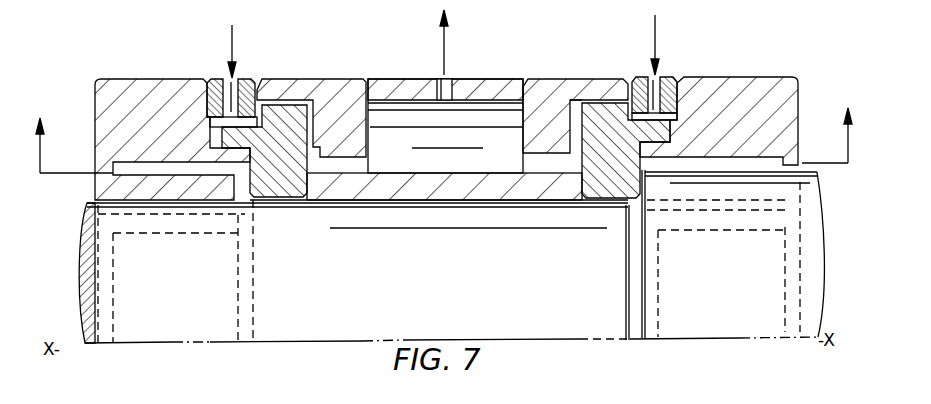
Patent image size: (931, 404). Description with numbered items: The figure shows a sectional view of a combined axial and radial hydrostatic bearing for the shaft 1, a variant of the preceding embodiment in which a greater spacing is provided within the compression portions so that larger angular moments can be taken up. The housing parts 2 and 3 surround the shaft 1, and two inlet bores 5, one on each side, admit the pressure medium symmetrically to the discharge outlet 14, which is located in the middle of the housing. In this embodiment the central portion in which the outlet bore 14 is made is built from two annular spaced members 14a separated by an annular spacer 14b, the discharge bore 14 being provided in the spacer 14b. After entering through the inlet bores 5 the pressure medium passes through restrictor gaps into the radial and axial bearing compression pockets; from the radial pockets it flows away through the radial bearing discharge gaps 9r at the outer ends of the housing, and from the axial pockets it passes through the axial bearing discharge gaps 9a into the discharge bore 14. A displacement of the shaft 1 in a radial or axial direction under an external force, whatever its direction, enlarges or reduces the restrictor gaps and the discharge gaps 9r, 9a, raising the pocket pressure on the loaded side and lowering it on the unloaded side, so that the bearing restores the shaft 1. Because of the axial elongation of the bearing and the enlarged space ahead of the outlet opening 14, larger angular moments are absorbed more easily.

The shaft 1 is at (815, 264).
The housing / bearing block 2 is at (165, 79).
The sealing ring 3 is at (288, 200).
The inlet bore 5 is at (242, 76).
The bearing discharge gap (axial) 9a is at (578, 155).
The bearing discharge gap (radial) 9r is at (95, 172).
The discharge outlet 14 is at (452, 77).
The annular spaced member 14a is at (323, 80).
The annular spacer 14b is at (515, 79).